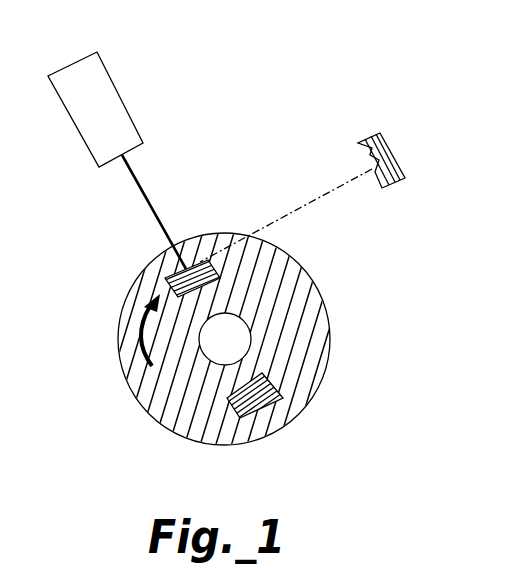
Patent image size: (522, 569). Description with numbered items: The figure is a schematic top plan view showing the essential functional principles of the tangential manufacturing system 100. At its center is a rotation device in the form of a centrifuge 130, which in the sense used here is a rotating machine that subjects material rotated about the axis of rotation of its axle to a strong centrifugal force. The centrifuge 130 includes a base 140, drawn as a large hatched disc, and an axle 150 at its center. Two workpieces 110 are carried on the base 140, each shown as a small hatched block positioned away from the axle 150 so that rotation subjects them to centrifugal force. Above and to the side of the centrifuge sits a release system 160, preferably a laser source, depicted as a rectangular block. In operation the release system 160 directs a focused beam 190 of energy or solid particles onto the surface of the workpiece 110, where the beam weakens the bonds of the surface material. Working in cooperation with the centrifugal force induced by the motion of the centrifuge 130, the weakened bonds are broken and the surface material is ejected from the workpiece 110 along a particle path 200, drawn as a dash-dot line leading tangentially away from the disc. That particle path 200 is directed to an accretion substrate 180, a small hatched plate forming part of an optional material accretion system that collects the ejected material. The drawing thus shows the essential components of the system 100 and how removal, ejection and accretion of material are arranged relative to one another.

The tangential manufacturing system 100 is at (255, 100).
The workpiece 110 is at (222, 279).
The centrifuge 130 is at (258, 446).
The base 140 is at (310, 358).
The axle 150 is at (229, 338).
The release system 160 is at (88, 67).
The accretion substrate 180 is at (389, 147).
The focused beam 190 is at (140, 192).
The particle path 200 is at (270, 222).